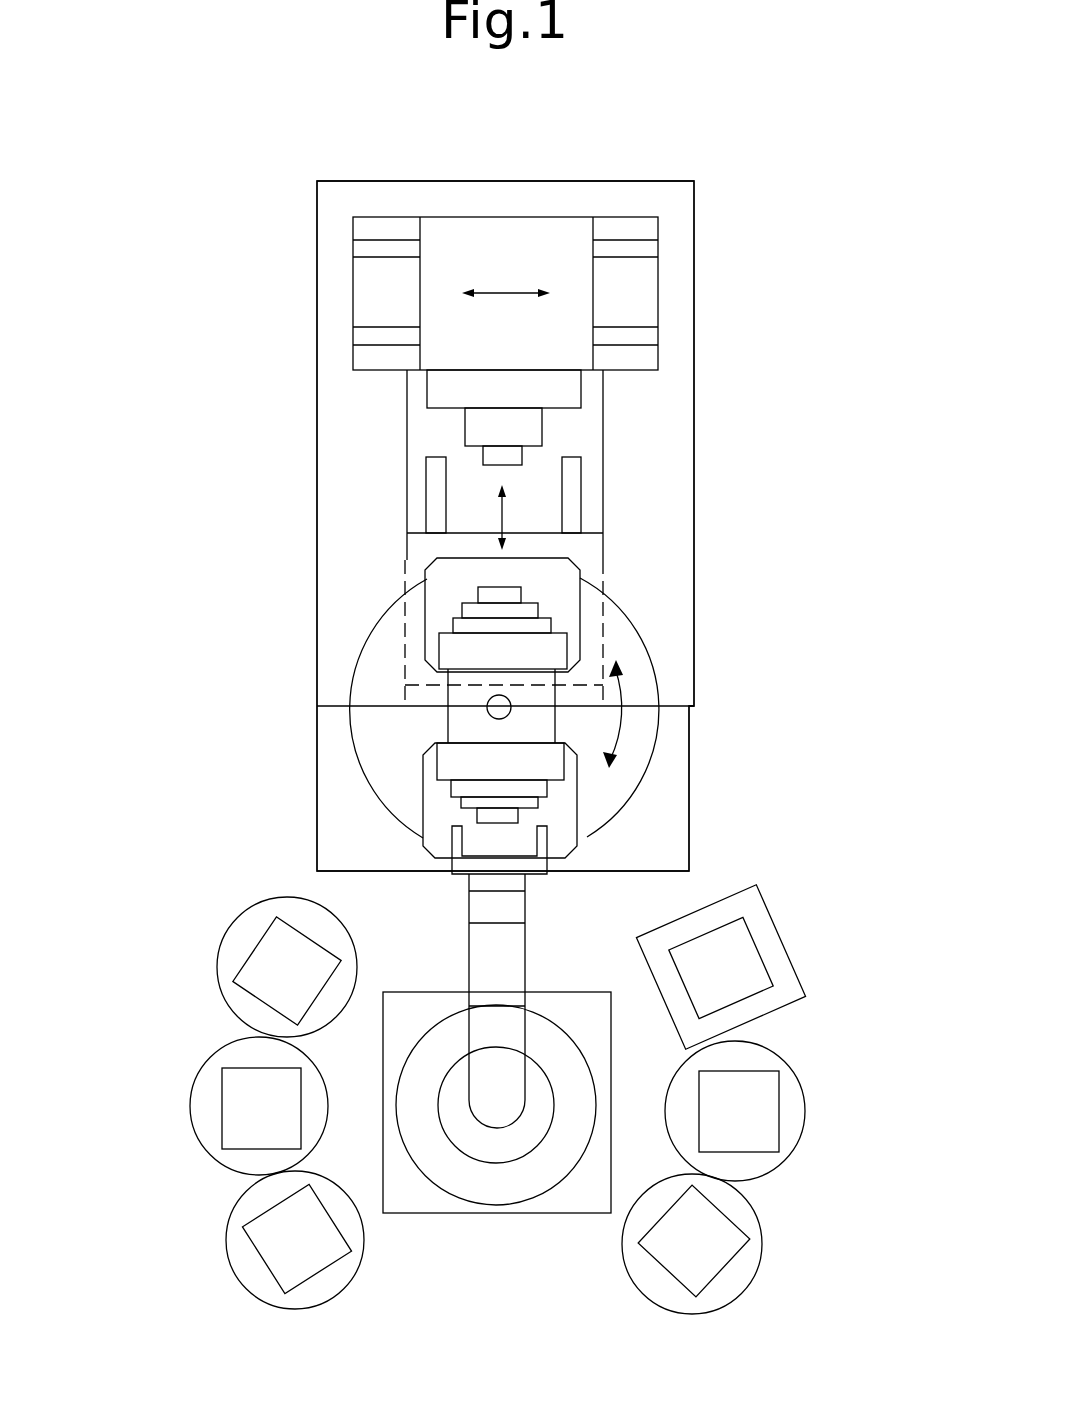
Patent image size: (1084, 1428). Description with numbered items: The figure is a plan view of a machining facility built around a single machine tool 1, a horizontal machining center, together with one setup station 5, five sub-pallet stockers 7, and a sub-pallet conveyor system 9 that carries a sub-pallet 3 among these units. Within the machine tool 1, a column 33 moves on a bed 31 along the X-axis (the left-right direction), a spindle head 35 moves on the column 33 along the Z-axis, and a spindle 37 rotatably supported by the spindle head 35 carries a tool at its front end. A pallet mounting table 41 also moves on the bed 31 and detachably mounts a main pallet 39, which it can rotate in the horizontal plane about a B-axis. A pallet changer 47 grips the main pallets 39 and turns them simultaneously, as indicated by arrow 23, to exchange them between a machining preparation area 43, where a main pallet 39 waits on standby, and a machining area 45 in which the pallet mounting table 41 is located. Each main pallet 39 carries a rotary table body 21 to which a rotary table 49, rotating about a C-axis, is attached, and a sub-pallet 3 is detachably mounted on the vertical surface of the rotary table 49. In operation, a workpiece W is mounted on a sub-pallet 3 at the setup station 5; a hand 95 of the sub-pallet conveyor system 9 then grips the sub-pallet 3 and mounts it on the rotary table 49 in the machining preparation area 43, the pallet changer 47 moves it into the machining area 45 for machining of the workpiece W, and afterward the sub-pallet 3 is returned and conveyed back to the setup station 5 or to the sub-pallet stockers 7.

The machine tool 1 is at (736, 313).
The sub-pallet 3 is at (528, 607).
The setup station 5 is at (765, 918).
The sub-pallet stocker 7 is at (253, 916).
The sub-pallet conveyor system 9 is at (487, 1187).
The rotary table body 21 is at (455, 648).
The arrow 23 is at (624, 707).
The bed 31 is at (694, 393).
The column 33 is at (553, 237).
The spindle head 35 is at (452, 392).
The spindle 37 is at (497, 458).
The main pallet 39 is at (438, 612).
The pallet mounting table 41 is at (585, 553).
The machining preparation area 43 is at (670, 761).
The machining area 45 is at (650, 532).
The pallet changer 47 is at (463, 724).
The rotary table 49 is at (540, 628).
The hand 95 is at (528, 865).
The workpiece W is at (500, 593).